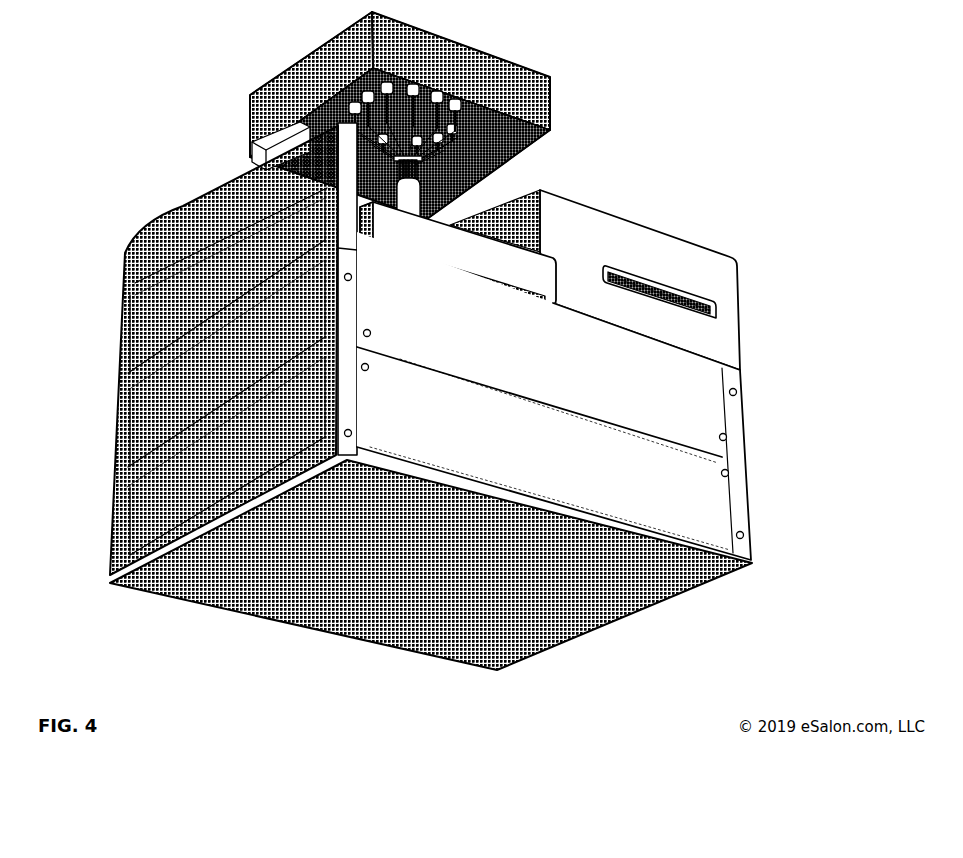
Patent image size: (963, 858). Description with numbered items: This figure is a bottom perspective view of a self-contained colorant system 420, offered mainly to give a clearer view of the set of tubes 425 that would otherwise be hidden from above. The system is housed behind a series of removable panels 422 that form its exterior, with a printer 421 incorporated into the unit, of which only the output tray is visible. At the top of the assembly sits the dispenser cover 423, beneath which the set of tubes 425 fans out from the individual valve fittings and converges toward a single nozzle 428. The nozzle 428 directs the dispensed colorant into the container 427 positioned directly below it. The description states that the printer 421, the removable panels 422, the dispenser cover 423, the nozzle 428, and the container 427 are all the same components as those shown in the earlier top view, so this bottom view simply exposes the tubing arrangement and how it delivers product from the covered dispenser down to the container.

The self-contained colorant system 420 is at (435, 341).
The printer 421 is at (722, 290).
The removable panels 422 is at (108, 382).
The dispenser cover 423 is at (527, 82).
The set of tubes 425 is at (445, 170).
The container 427 is at (412, 207).
The nozzle 428 is at (418, 185).